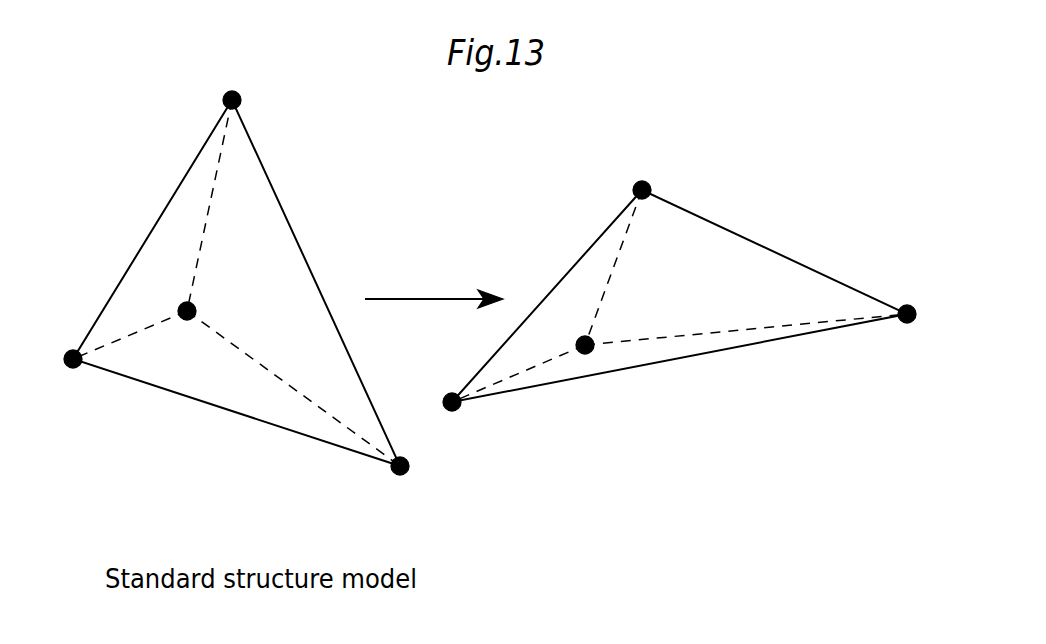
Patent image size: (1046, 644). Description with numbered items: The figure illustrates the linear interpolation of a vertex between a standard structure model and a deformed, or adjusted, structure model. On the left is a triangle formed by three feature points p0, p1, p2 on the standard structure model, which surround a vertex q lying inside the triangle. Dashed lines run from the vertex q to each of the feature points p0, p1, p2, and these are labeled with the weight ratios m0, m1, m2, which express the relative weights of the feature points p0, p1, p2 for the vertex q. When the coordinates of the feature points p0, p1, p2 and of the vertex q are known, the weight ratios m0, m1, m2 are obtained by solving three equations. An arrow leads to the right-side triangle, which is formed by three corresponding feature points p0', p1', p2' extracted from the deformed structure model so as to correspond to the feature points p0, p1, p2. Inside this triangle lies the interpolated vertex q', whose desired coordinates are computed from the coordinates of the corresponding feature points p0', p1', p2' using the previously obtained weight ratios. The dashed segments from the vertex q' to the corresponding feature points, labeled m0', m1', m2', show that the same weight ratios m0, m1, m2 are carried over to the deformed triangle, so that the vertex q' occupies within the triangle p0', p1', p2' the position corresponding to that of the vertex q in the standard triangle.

The feature point p0 is at (249, 101).
The feature point p1 is at (418, 467).
The feature point p2 is at (61, 373).
The vertex q is at (200, 310).
The weight ratio m0 is at (219, 205).
The weight ratio m1 is at (293, 388).
The weight ratio m2 is at (130, 343).
The corresponding feature point p0' is at (645, 171).
The corresponding feature point p1' is at (905, 332).
The corresponding feature point p2' is at (466, 421).
The interpolated vertex q' is at (601, 330).
The distance from q' to p0' m0' is at (626, 267).
The distance from q' to p1' m1' is at (746, 320).
The distance from q' to p2' m2' is at (518, 363).